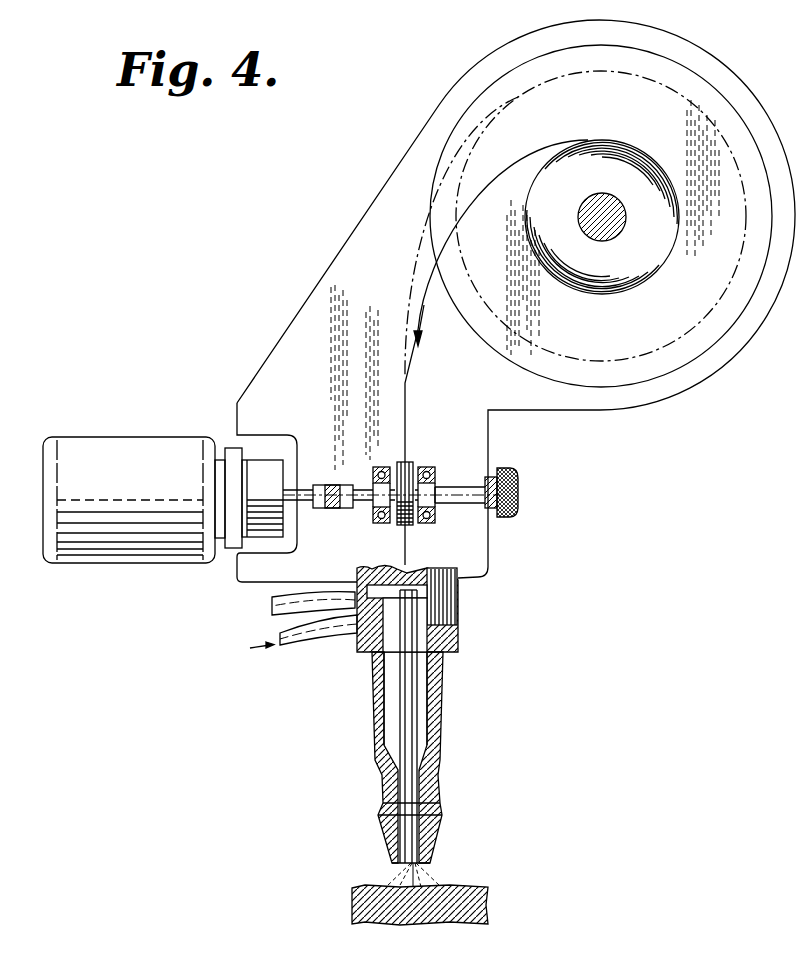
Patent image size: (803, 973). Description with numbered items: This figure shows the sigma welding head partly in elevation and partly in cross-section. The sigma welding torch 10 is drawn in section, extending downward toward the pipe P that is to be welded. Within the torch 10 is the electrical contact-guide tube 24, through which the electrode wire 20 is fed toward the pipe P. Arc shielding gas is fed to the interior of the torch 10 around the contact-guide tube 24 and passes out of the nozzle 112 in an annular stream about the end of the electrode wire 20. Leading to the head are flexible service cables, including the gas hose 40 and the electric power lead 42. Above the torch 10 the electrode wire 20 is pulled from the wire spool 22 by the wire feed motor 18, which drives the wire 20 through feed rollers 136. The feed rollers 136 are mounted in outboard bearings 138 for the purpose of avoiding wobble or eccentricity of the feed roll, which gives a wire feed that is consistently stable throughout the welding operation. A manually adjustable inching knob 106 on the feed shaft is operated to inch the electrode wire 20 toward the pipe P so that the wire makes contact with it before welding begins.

The wire feed motor 18 is at (115, 447).
The electrode wire 20 is at (412, 266).
The wire spool 22 is at (668, 363).
The outboard bearings 138 is at (432, 467).
The feed rollers 136 is at (407, 525).
The inching knob 106 is at (518, 493).
The electric power lead 42 is at (272, 605).
The gas hose 40 is at (323, 633).
The contact-guide tube 24 is at (408, 677).
The sigma welding torch 10 is at (438, 720).
The nozzle 112 is at (442, 835).
The pipe P is at (418, 910).